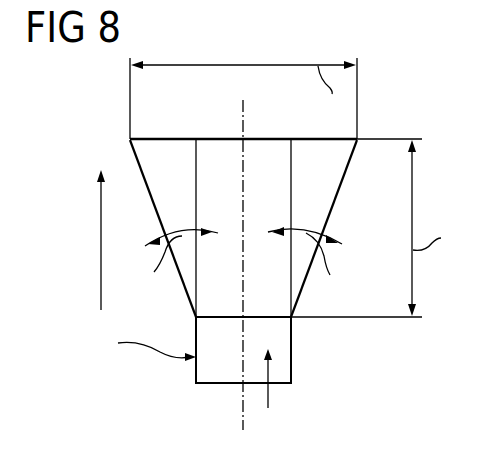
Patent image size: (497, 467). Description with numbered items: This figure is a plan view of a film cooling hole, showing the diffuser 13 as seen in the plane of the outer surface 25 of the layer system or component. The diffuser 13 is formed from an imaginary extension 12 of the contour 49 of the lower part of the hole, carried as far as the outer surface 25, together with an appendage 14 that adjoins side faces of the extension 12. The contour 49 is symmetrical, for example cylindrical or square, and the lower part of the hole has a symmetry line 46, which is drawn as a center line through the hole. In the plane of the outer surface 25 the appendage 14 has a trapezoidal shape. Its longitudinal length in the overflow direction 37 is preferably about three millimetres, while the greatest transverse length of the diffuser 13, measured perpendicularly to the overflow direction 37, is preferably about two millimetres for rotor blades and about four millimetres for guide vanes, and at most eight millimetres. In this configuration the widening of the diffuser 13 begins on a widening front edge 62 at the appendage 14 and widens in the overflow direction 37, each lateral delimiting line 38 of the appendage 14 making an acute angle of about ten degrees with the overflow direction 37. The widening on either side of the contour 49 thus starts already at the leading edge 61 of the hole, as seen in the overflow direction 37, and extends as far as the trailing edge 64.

The outer surface 25 is at (337, 449).
The appendage 14 is at (236, 192).
The trailing edge 64 is at (227, 137).
The lateral delimiting line 38 is at (136, 166).
The overflow direction 37 is at (100, 257).
The symmetry line 46 is at (243, 398).
The contour 49 is at (271, 382).
The extension 12 is at (243, 350).
The widening front edge 62 is at (255, 320).
The leading edge 61 is at (205, 384).
The diffuser 13 is at (270, 398).